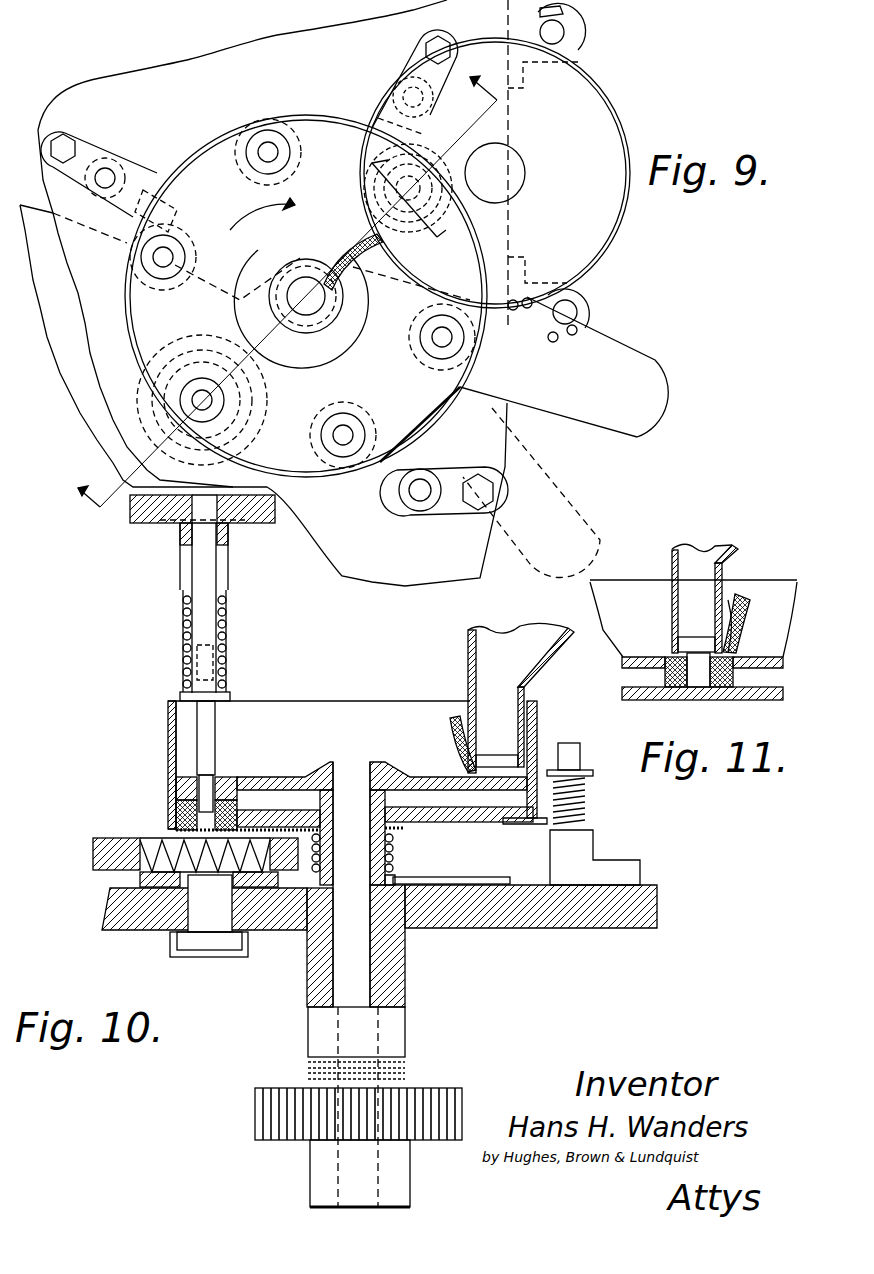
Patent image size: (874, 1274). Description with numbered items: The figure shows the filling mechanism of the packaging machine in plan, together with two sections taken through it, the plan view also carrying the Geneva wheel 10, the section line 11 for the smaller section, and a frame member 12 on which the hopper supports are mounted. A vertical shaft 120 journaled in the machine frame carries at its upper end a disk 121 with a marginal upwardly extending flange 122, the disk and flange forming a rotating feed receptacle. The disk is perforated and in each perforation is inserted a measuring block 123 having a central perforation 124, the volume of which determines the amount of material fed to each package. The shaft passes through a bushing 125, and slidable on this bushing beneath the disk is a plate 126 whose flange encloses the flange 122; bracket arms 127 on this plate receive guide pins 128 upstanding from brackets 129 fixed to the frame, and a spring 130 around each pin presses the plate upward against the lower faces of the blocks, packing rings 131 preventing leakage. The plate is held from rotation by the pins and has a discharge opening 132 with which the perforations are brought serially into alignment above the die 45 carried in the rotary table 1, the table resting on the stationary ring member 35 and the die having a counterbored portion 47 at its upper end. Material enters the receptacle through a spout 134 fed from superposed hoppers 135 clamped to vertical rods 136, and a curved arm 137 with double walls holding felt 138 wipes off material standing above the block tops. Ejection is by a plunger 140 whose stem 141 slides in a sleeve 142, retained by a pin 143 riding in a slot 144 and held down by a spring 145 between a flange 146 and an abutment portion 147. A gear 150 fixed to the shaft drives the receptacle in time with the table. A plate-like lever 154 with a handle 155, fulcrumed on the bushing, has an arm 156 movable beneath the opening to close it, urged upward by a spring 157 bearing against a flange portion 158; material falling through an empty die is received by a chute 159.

In FIG. 9, the rotary table 1 is at (368, 585).
In FIG. 9, the Geneva wheel 10 is at (268, 280).
In FIG. 9, the section line 11— 11 is at (416, 198).
In FIG. 9, the frame plate 12 is at (503, 233).
In FIG. 10, the frame plate 12 is at (588, 938).
In FIG. 10, the ring member 35 is at (125, 893).
In FIG. 10, the female die 45 is at (157, 860).
In FIG. 10, the counterbored portion 47 is at (150, 845).
In FIG. 9, the vertical shaft 120 is at (325, 298).
In FIG. 10, the vertical shaft 120 is at (362, 989).
In FIG. 10, the disk 121 is at (302, 772).
In FIG. 11, the disk 121 is at (786, 668).
In FIG. 10, the marginal flange 122 is at (170, 749).
In FIG. 9, the measuring block 123 is at (170, 252).
In FIG. 10, the measuring block 123 is at (234, 788).
In FIG. 11, the measuring block 123 is at (665, 668).
In FIG. 9, the central perforation 124 is at (290, 151).
In FIG. 10, the central perforation 124 is at (209, 784).
In FIG. 11, the central perforation 124 is at (700, 678).
In FIG. 10, the bushing 125 is at (400, 876).
In FIG. 10, the plate 126 is at (487, 815).
In FIG. 11, the plate 126 is at (770, 700).
In FIG. 9, the bracket arm 127 is at (422, 470).
In FIG. 10, the bracket arm 127 is at (590, 768).
In FIG. 9, the guide pin 128 is at (420, 503).
In FIG. 10, the guide pin 128 is at (568, 744).
In FIG. 9, the bracket 129 is at (93, 160).
In FIG. 10, the bracket 129 is at (610, 868).
In FIG. 10, the spring 130 is at (586, 796).
In FIG. 10, the packing ring 131 is at (242, 818).
In FIG. 11, the packing ring 131 is at (736, 694).
In FIG. 10, the opening 132 is at (210, 816).
In FIG. 10, the spout 134 is at (487, 690).
In FIG. 11, the spout 134 is at (684, 566).
In FIG. 9, the hopper 135 is at (605, 142).
In FIG. 9, the vertical rod 136 is at (564, 32).
In FIG. 9, the curved arm 137 is at (348, 242).
In FIG. 11, the curved arm 137 is at (740, 628).
In FIG. 10, the felt 138 is at (457, 727).
In FIG. 11, the felt 138 is at (744, 603).
In FIG. 10, the plunger 140 is at (214, 738).
In FIG. 10, the stem 141 is at (212, 568).
In FIG. 10, the sleeve 142 is at (228, 528).
In FIG. 10, the pin 143 is at (182, 597).
In FIG. 10, the slot 144 is at (180, 562).
In FIG. 10, the spring 145 is at (220, 646).
In FIG. 10, the flange 146 is at (230, 692).
In FIG. 10, the abutment portion 147 is at (226, 610).
In FIG. 10, the gear 150 is at (460, 1100).
In FIG. 9, the plate-like lever 154 is at (612, 356).
In FIG. 9, the handle 155 is at (660, 424).
In FIG. 9, the arm 156 is at (220, 347).
In FIG. 10, the spring 157 is at (392, 844).
In FIG. 10, the flange portion 158 is at (412, 883).
In FIG. 10, the chute 159 is at (226, 958).